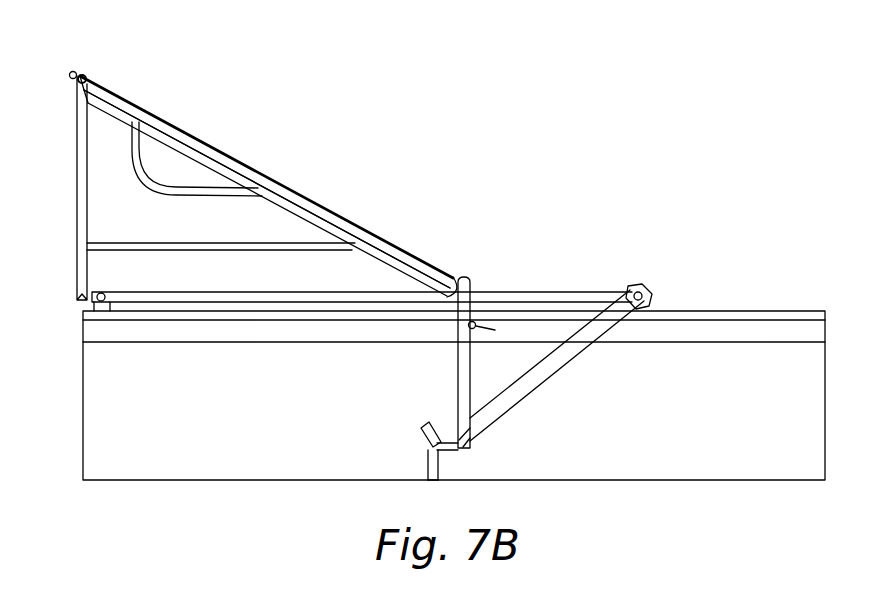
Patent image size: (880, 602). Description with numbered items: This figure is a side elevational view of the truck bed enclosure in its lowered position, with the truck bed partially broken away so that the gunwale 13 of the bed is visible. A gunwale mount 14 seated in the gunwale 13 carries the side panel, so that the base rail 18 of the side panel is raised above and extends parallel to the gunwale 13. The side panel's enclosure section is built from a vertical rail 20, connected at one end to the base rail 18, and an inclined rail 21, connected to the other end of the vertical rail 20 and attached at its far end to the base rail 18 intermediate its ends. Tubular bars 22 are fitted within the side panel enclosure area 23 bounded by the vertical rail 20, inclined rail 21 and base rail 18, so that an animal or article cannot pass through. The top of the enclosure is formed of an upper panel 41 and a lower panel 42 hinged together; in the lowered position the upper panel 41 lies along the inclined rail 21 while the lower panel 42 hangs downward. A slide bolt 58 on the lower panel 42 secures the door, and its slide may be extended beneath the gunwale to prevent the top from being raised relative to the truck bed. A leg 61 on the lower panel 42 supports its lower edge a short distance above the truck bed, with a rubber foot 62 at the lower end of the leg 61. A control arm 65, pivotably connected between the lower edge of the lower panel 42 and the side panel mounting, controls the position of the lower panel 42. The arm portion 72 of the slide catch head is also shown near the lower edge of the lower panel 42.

The gunwale 13 is at (777, 310).
The gunwale mount 14 is at (106, 313).
The base rail 18 is at (165, 293).
The vertical rail 20 is at (80, 168).
The inclined rail 21 is at (150, 128).
The tubular bar 22 is at (172, 196).
The side panel enclosure area 23 is at (106, 198).
The upper panel 41 is at (295, 188).
The lower panel 42 is at (473, 287).
The slide bolt 58 is at (474, 321).
The leg 61 is at (438, 460).
The rubber foot 62 is at (433, 482).
The control arm 65 is at (560, 366).
The arm portion 72 is at (423, 438).